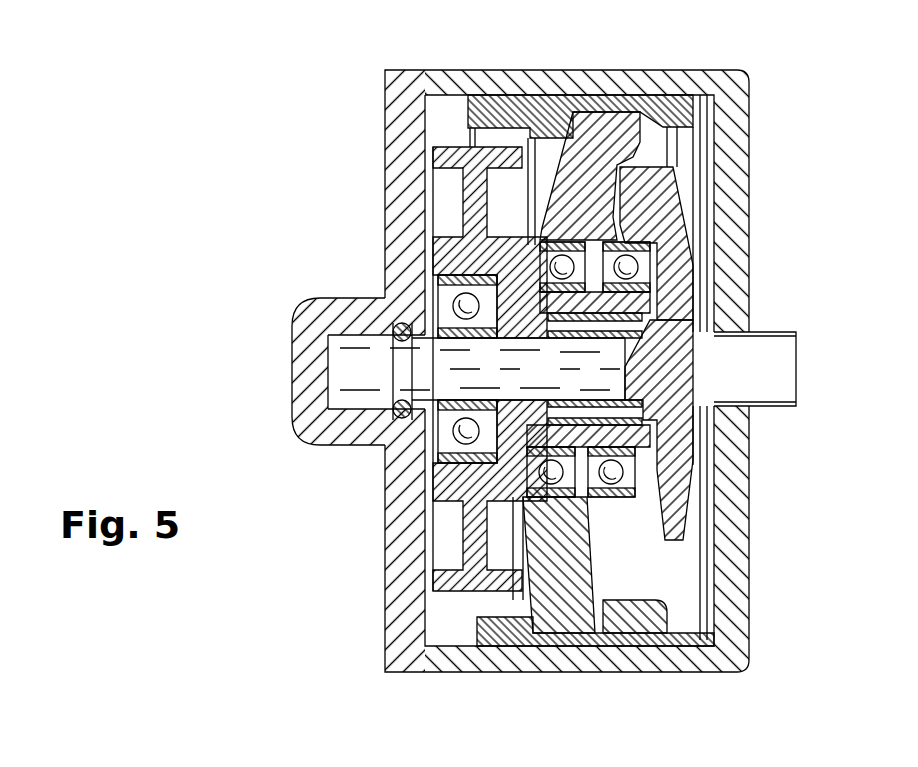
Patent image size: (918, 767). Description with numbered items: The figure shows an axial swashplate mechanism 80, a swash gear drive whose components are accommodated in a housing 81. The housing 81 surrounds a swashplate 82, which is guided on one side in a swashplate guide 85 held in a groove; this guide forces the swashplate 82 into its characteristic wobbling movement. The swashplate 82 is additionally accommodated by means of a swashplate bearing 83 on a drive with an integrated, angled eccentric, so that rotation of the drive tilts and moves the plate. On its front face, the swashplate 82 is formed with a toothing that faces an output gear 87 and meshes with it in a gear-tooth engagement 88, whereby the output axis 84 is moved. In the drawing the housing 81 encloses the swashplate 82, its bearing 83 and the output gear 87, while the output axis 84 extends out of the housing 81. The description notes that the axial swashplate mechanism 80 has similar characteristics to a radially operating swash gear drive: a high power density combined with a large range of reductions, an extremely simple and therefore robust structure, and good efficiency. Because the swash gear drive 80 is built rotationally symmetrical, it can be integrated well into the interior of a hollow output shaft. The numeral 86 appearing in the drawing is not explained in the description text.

The axial swashplate mechanism 80 is at (268, 259).
The housing 81 is at (728, 524).
The swashplate 82 is at (587, 197).
The swashplate bearing 83 is at (537, 262).
The output axis 84 is at (358, 358).
The swashplate guide 85 is at (556, 100).
The rotor hub 86 is at (645, 432).
The output gear 87 is at (660, 540).
The gear-tooth engagement 88 is at (628, 188).